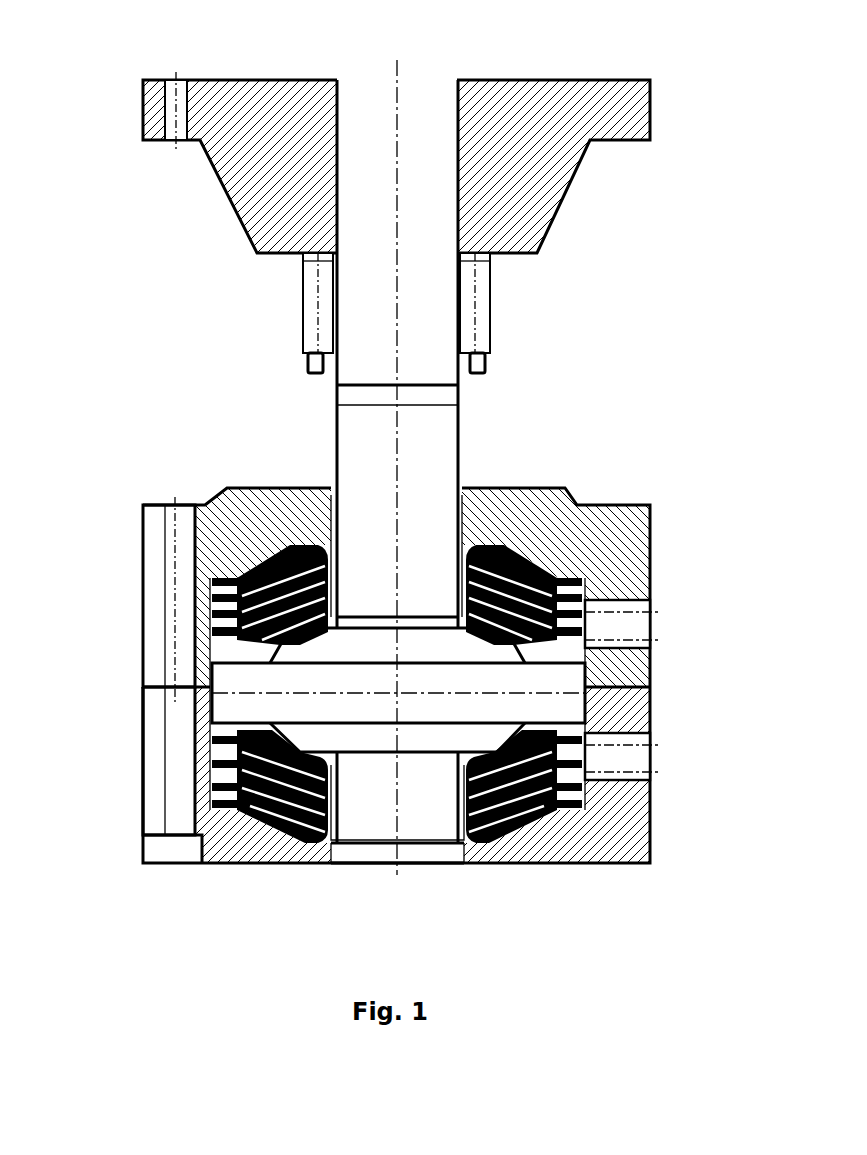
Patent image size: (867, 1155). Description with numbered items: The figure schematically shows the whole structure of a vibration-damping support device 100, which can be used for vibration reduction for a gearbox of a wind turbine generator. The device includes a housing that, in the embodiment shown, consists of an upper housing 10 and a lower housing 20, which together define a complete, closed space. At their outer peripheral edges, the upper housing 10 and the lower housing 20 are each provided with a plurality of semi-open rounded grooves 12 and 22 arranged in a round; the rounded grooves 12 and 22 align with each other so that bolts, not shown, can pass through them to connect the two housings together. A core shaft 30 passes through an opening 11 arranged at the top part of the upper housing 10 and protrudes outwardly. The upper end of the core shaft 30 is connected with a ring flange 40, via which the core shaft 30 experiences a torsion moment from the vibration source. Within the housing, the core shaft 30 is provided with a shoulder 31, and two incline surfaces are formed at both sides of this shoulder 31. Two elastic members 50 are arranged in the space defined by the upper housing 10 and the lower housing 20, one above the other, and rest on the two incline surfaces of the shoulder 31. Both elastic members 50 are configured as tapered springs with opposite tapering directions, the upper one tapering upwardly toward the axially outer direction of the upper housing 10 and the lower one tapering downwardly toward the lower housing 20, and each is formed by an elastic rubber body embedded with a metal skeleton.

The vibration-damping support device 100 is at (722, 324).
The ring flange 40 is at (258, 110).
The core shaft 30 is at (358, 462).
The shoulder 31 is at (563, 703).
The upper housing 10 is at (615, 527).
The opening 11 is at (470, 507).
The semi-open rounded groove 12 is at (153, 617).
The lower housing 20 is at (617, 838).
The semi-open rounded groove 22 is at (153, 742).
The elastic member 50 is at (580, 593).